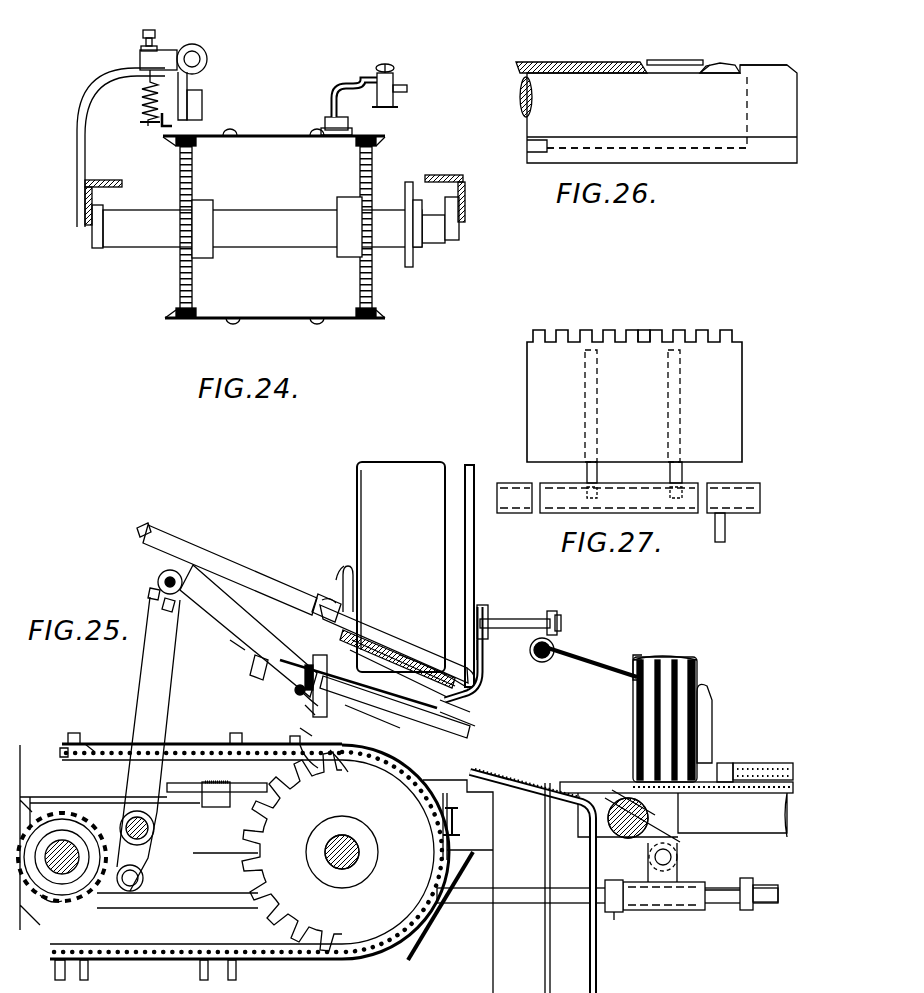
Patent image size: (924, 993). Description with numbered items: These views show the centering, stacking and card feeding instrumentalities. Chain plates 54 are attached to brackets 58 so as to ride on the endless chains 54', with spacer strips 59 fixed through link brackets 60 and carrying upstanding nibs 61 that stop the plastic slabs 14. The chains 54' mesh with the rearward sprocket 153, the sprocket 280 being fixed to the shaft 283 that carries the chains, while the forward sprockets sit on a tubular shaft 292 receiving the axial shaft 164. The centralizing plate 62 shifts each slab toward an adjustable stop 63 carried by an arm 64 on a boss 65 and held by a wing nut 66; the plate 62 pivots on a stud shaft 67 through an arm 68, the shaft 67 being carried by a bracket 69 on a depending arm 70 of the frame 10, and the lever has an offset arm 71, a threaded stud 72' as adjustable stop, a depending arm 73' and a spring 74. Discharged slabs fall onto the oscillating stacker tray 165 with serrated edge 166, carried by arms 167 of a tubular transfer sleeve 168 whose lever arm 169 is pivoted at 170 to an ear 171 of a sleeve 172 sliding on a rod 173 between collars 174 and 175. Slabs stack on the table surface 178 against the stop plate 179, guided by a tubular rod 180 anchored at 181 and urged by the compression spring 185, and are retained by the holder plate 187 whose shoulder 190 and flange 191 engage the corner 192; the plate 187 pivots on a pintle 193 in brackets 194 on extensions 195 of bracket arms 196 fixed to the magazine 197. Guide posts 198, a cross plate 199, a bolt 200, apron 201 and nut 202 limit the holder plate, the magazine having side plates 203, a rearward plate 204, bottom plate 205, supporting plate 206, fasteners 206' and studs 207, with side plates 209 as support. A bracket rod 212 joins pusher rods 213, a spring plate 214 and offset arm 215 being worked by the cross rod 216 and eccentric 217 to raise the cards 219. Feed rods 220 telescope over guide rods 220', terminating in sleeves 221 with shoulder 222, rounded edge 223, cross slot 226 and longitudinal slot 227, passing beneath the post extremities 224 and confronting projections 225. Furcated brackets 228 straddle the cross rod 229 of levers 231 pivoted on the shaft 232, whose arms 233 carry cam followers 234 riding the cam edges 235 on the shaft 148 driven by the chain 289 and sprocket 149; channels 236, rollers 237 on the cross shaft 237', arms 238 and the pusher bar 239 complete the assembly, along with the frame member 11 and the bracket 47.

In FIG. 24, the frame 10 is at (85, 182).
In FIG. 25, the frame 10 is at (42, 797).
In FIG. 25, the frame member 11 is at (493, 987).
In FIG. 25, the plastic slab 14 is at (690, 673).
In FIG. 24, the bracket 47 is at (163, 122).
In FIG. 24, the chain plate 54 is at (274, 228).
In FIG. 25, the chain plate 54 is at (249, 849).
In FIG. 24, the endless chain 54' is at (277, 229).
In FIG. 25, the endless chain 54' is at (102, 733).
In FIG. 24, the bracket 58 is at (178, 147).
In FIG. 25, the bracket 58 is at (68, 742).
In FIG. 25, the spacer strip 59 is at (308, 716).
In FIG. 25, the link bracket 60 is at (315, 768).
In FIG. 24, the nib 61 is at (230, 138).
In FIG. 25, the nib 61 is at (300, 740).
In FIG. 24, the upstanding plate 62 is at (202, 104).
In FIG. 24, the stop 63 is at (326, 120).
In FIG. 24, the arm 64 is at (348, 82).
In FIG. 24, the boss 65 is at (393, 88).
In FIG. 24, the wing nut 66 is at (385, 64).
In FIG. 24, the stud shaft 67 is at (192, 44).
In FIG. 24, the arm 68 is at (187, 86).
In FIG. 24, the bracket 69 is at (90, 88).
In FIG. 24, the depending arm 70 is at (77, 146).
In FIG. 24, the offset arm 71 is at (168, 50).
In FIG. 24, the threaded stud 72' is at (139, 34).
In FIG. 24, the depending arm 73' is at (128, 131).
In FIG. 24, the spring 74 is at (143, 110).
In FIG. 25, the shaft 148 is at (64, 840).
In FIG. 25, the sprocket 149 is at (45, 898).
In FIG. 24, the rearward sprocket 153 is at (192, 278).
In FIG. 25, the axial pin 164 is at (334, 870).
In FIG. 27, the stacker tray 165 is at (535, 368).
In FIG. 25, the stacker tray 165 is at (500, 795).
In FIG. 27, the serrated edge 166 is at (640, 332).
In FIG. 25, the serrated edge 166 is at (488, 770).
In FIG. 27, the arm 167 is at (597, 470).
In FIG. 25, the arm 167 is at (550, 810).
In FIG. 27, the tubular transfer sleeve 168 is at (745, 483).
In FIG. 25, the tubular transfer sleeve 168 is at (650, 808).
In FIG. 27, the lever arm 169 is at (726, 522).
In FIG. 25, the lever arm 169 is at (660, 832).
In FIG. 25, the pivot 170 is at (672, 856).
In FIG. 25, the ear 171 is at (648, 912).
In FIG. 25, the sleeve 172 is at (660, 910).
In FIG. 25, the rod 173 is at (722, 904).
In FIG. 25, the collar stop 174 is at (748, 880).
In FIG. 25, the collar 175 is at (614, 915).
In FIG. 25, the supporting table surface 178 is at (728, 765).
In FIG. 25, the stop plate 179 is at (705, 728).
In FIG. 25, the tubular rod 180 is at (758, 765).
In FIG. 25, the anchorage 181 is at (755, 763).
In FIG. 25, the compression spring 185 is at (745, 795).
In FIG. 25, the holder plate 187 is at (565, 655).
In FIG. 25, the shoulder 190 is at (628, 667).
In FIG. 25, the offset flange 191 is at (652, 658).
In FIG. 25, the corner 192 is at (634, 684).
In FIG. 25, the pintle 193 is at (555, 643).
In FIG. 25, the bracket 194 is at (541, 660).
In FIG. 25, the upstanding extension 195 is at (487, 655).
In FIG. 25, the bracket arm 196 is at (473, 697).
In FIG. 25, the magazine 197 is at (395, 478).
In FIG. 25, the front guide post 198 is at (476, 468).
In FIG. 25, the cross plate 199 is at (486, 608).
In FIG. 25, the bolt 200 is at (530, 620).
In FIG. 25, the apron 201 is at (560, 628).
In FIG. 25, the nut 202 is at (556, 614).
In FIG. 25, the side plate 203 is at (385, 475).
In FIG. 25, the rearward plate 204 is at (352, 576).
In FIG. 25, the bottom plate 205 is at (385, 648).
In FIG. 25, the supporting plate 206 is at (315, 679).
In FIG. 25, the fastener 206' is at (358, 684).
In FIG. 25, the threaded stud 207 is at (408, 656).
In FIG. 25, the side plate 209 is at (445, 808).
In FIG. 25, the U-shaped bracket rod 212 is at (290, 660).
In FIG. 25, the card pusher rod 213 is at (370, 636).
In FIG. 25, the spring plate 214 is at (478, 728).
In FIG. 25, the offset arm 215 is at (472, 712).
In FIG. 25, the cross rod 216 is at (348, 717).
In FIG. 25, the eccentric section 217 is at (392, 730).
In FIG. 25, the card 219 is at (690, 660).
In FIG. 26, the tubular feed rod 220 is at (638, 100).
In FIG. 25, the tubular feed rod 220 is at (227, 550).
In FIG. 26, the guide rod 220' is at (501, 103).
In FIG. 25, the guide rod 220' is at (394, 637).
In FIG. 26, the sleeve 221 is at (586, 62).
In FIG. 25, the sleeve 221 is at (318, 598).
In FIG. 26, the top shoulder 222 is at (708, 62).
In FIG. 26, the rounded forward edge 223 is at (718, 64).
In FIG. 25, the rounded forward edge 223 is at (345, 565).
In FIG. 25, the lower extremity 224 is at (468, 655).
In FIG. 26, the curved projection 225 is at (747, 66).
In FIG. 25, the curved projection 225 is at (482, 680).
In FIG. 26, the cross slot 226 is at (708, 66).
In FIG. 25, the cross slot 226 is at (337, 600).
In FIG. 26, the longitudinal slot 227 is at (766, 155).
In FIG. 25, the furcated bracket 228 is at (160, 562).
In FIG. 25, the cross rod 229 is at (158, 580).
In FIG. 25, the depending lever 231 is at (135, 710).
In FIG. 25, the shaft 232 is at (154, 830).
In FIG. 25, the arm 233 is at (150, 858).
In FIG. 25, the cam follower 234 is at (143, 884).
In FIG. 25, the peripheral cam edge 235 is at (84, 905).
In FIG. 25, the channel 236 is at (255, 672).
In FIG. 25, the roller 237 is at (290, 703).
In FIG. 25, the cross shaft 237' is at (218, 647).
In FIG. 25, the arm 238 is at (238, 632).
In FIG. 25, the pusher bar 239 is at (343, 770).
In FIG. 24, the sprocket 280 is at (413, 255).
In FIG. 24, the shaft 283 is at (262, 217).
In FIG. 25, the endless chain 289 is at (60, 750).
In FIG. 25, the tubular shaft 292 is at (355, 840).